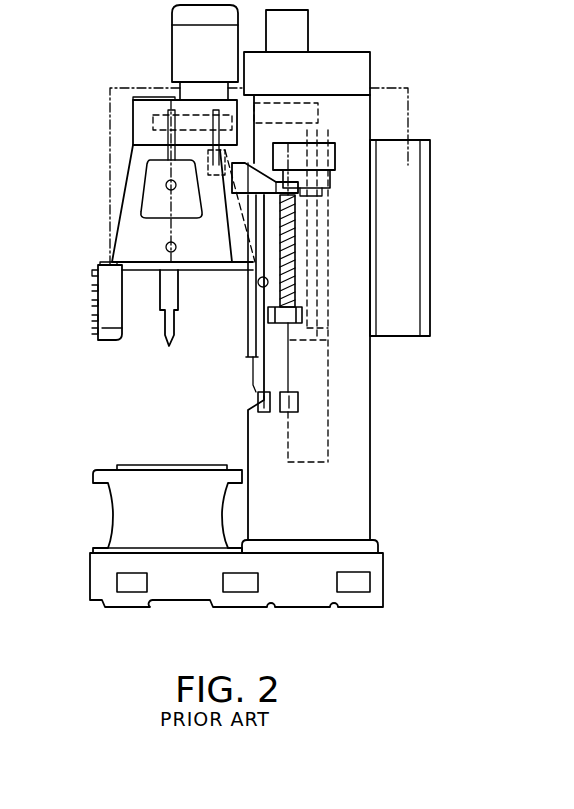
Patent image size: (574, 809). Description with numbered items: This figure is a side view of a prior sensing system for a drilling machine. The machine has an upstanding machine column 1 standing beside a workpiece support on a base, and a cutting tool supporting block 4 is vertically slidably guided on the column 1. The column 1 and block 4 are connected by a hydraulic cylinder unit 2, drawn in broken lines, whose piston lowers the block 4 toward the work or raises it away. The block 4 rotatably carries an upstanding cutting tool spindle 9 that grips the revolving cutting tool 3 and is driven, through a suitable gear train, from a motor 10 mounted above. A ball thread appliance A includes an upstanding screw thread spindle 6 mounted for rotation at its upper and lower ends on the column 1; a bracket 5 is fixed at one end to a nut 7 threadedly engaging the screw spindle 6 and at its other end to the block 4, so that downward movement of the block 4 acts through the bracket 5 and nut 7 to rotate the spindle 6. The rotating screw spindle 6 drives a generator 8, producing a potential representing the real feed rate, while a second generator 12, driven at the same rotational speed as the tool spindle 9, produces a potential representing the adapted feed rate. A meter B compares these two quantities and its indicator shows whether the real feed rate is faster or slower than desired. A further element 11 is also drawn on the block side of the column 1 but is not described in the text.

The machine column 1 is at (372, 400).
The hydraulic cylinder unit 2 is at (328, 385).
The cutting tool 3 is at (163, 331).
The cutting tool supporting block 4 is at (130, 230).
The bracket 5 is at (277, 182).
The screw thread spindle 6 is at (261, 287).
The nut 7 is at (300, 188).
The generator 8 is at (298, 403).
The cutting tool spindle 9 is at (135, 158).
The motor 10 is at (228, 162).
The rod 11 is at (250, 376).
The generator 12 is at (256, 403).
The ball thread appliance A is at (268, 210).
The meter B is at (104, 302).